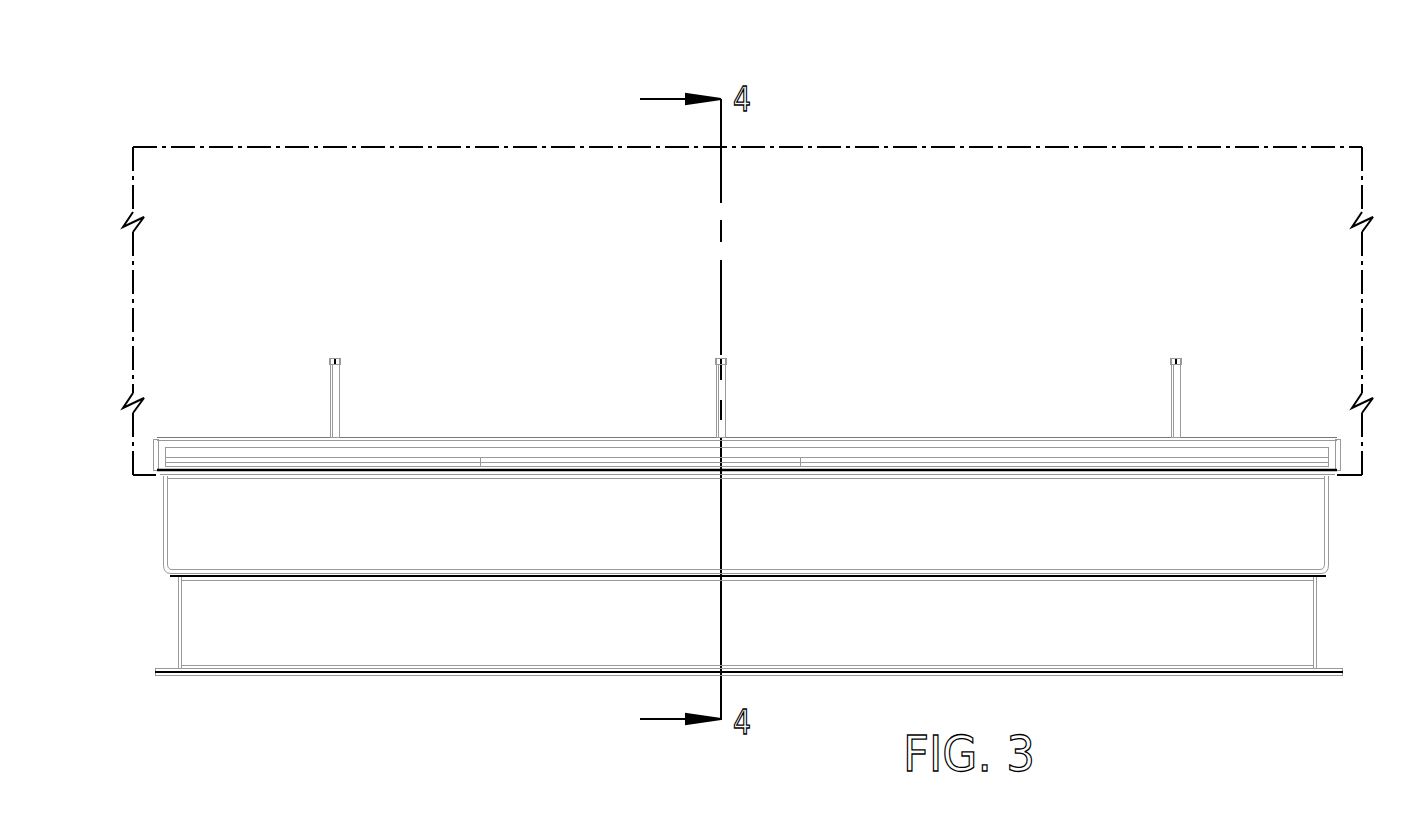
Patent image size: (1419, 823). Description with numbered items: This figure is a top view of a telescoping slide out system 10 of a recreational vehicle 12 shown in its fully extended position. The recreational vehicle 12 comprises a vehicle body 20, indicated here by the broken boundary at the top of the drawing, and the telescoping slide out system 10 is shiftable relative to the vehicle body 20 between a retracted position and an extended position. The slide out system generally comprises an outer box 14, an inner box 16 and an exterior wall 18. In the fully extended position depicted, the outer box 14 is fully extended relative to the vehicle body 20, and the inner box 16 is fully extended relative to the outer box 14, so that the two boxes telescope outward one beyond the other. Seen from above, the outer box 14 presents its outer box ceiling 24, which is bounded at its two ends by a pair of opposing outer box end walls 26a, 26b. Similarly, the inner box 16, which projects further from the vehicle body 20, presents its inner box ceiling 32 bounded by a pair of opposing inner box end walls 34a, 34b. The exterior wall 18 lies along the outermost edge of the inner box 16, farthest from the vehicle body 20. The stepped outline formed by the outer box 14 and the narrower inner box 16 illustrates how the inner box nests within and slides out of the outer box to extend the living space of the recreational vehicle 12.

The telescoping slide out system 10 is at (1355, 583).
The recreational vehicle 12 is at (870, 104).
The outer box 14 is at (1266, 532).
The inner box 16 is at (1252, 632).
The exterior wall 18 is at (1183, 675).
The vehicle body 20 is at (873, 217).
The outer box ceiling 24 is at (558, 512).
The outer box end wall 26a is at (163, 534).
The outer box end wall 26b is at (1333, 508).
The inner box ceiling 32 is at (563, 634).
The inner box end wall 34a is at (177, 633).
The inner box end wall 34b is at (1318, 609).